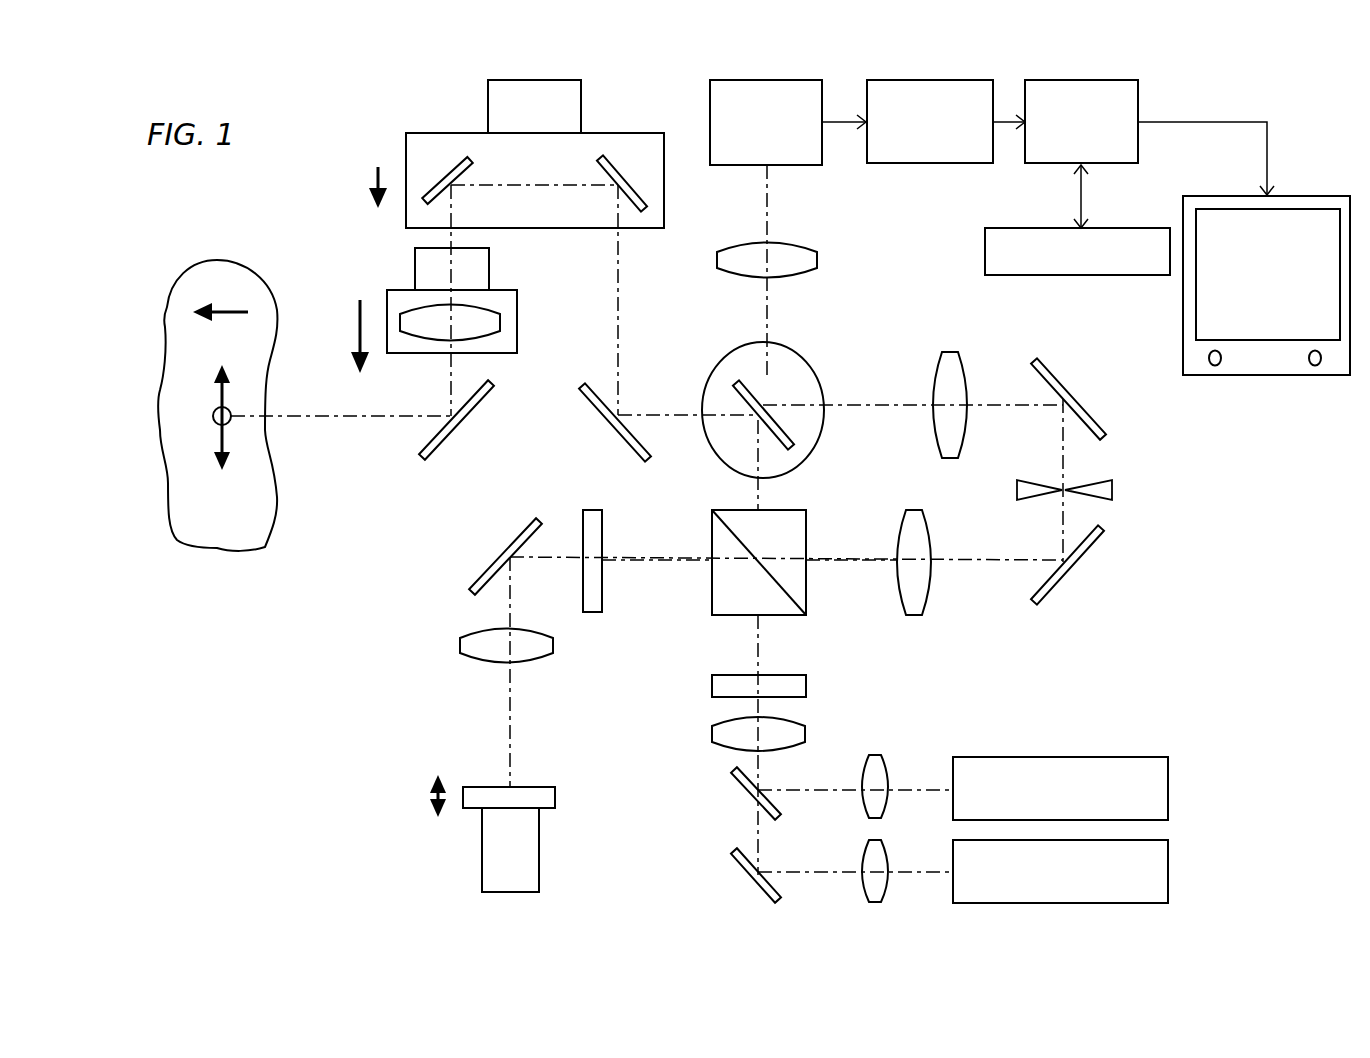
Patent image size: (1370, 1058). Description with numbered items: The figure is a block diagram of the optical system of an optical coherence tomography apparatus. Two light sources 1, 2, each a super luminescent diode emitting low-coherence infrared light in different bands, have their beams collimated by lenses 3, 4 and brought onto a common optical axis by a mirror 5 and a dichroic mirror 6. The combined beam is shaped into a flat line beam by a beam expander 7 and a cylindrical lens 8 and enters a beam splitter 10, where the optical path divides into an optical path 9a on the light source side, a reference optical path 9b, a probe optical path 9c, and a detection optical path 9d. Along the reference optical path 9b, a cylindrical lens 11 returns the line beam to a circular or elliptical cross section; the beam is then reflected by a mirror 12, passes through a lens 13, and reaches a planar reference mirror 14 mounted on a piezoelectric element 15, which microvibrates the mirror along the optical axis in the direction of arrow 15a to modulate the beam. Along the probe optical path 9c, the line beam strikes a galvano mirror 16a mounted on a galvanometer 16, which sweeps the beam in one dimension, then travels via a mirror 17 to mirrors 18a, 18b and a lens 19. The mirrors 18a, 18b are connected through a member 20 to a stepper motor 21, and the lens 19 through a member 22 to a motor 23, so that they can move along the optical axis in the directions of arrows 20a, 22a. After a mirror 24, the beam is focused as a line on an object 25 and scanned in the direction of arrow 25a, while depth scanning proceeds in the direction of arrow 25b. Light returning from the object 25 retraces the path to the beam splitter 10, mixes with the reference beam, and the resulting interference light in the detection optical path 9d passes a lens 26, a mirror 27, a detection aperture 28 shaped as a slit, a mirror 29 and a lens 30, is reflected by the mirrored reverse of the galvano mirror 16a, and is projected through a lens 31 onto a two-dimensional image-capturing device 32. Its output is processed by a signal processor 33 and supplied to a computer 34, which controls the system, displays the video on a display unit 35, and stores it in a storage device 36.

The light source 1 is at (1168, 872).
The light source 2 is at (1168, 788).
The lens 3 is at (880, 840).
The lens 4 is at (875, 755).
The mirror 5 is at (745, 875).
The dichroic mirror 6 is at (745, 792).
The beam expander 7 is at (805, 733).
The cylindrical lens 8 is at (806, 686).
The optical path on the light source side 9a is at (757, 633).
The reference optical path 9b is at (680, 562).
The probe optical path 9c is at (757, 498).
The detection optical path 9d is at (833, 562).
The beam splitter 10 is at (708, 540).
The cylindrical lens 11 is at (597, 612).
The mirror 12 is at (512, 558).
The lens 13 is at (462, 653).
The planar mirror 14 is at (555, 797).
The piezoelectric element 15 is at (482, 860).
The arrow 15a is at (414, 796).
The galvanometer 16 is at (723, 358).
The galvano mirror 16a is at (797, 437).
The mirror 17 is at (602, 417).
The mirror 18a is at (617, 153).
The mirror 18b is at (460, 150).
The lens 19 is at (500, 320).
The member 20 is at (405, 155).
The arrow 20a is at (362, 185).
The motor 21 is at (542, 80).
The member 22 is at (387, 300).
The arrow 22a is at (345, 336).
The motor 23 is at (489, 268).
The mirror 24 is at (477, 410).
The object to be observed 25 is at (195, 548).
The arrow 25a is at (227, 433).
The arrow 25b is at (220, 299).
The lens 26 is at (923, 613).
The mirror 27 is at (1070, 572).
The detection aperture 28 is at (1112, 490).
The mirror 29 is at (1063, 385).
The lens 30 is at (950, 352).
The lens 31 is at (817, 260).
The two-dimensional image-capturing device 32 is at (767, 80).
The signal processor 33 is at (915, 80).
The computer 34 is at (1103, 80).
The display unit 35 is at (1237, 375).
The storage device 36 is at (1105, 228).